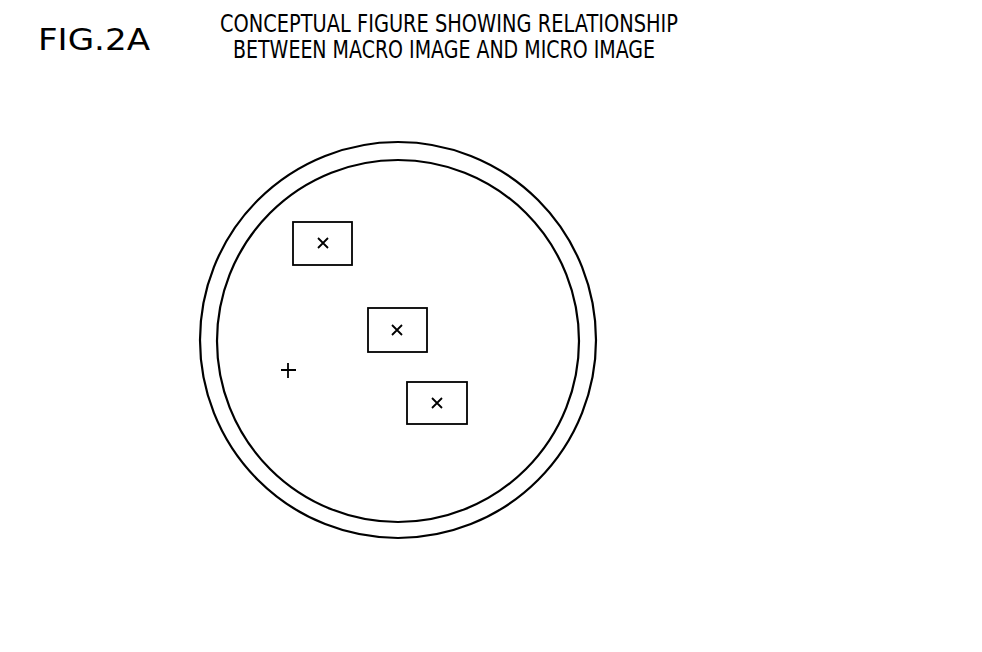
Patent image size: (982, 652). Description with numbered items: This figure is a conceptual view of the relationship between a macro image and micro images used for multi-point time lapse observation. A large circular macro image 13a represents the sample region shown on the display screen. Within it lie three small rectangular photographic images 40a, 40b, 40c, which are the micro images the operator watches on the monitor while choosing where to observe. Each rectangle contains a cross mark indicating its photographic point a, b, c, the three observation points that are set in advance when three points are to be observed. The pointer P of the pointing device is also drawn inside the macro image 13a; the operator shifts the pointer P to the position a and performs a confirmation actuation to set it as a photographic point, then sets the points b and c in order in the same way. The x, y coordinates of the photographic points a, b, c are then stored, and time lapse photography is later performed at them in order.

The macro image 13a is at (488, 505).
The photographic image 40a is at (293, 222).
The photographic image 40b is at (413, 308).
The photographic image 40c is at (467, 382).
The photographic point a is at (337, 243).
The photographic point b is at (410, 328).
The photographic point c is at (450, 403).
The pointer P is at (288, 370).